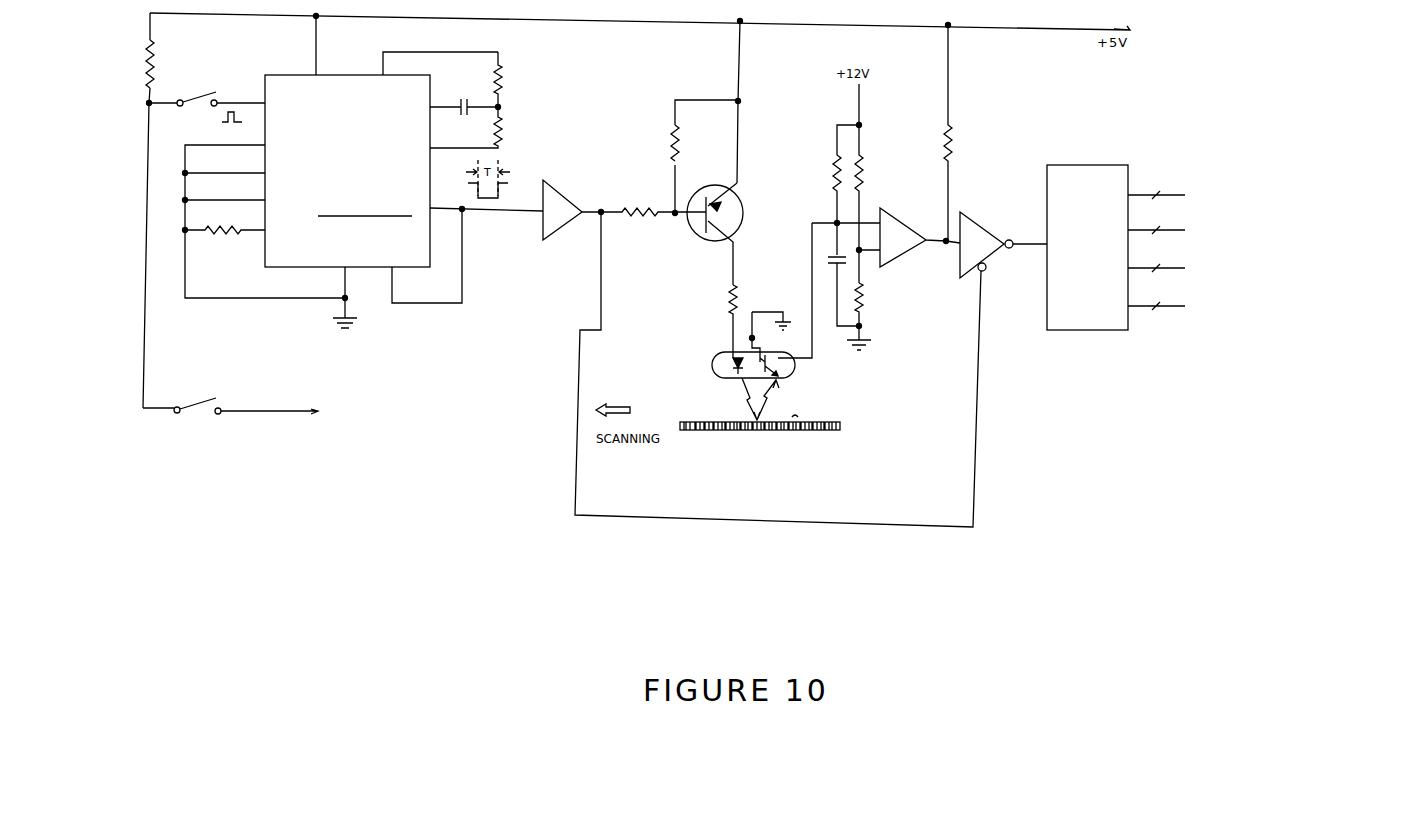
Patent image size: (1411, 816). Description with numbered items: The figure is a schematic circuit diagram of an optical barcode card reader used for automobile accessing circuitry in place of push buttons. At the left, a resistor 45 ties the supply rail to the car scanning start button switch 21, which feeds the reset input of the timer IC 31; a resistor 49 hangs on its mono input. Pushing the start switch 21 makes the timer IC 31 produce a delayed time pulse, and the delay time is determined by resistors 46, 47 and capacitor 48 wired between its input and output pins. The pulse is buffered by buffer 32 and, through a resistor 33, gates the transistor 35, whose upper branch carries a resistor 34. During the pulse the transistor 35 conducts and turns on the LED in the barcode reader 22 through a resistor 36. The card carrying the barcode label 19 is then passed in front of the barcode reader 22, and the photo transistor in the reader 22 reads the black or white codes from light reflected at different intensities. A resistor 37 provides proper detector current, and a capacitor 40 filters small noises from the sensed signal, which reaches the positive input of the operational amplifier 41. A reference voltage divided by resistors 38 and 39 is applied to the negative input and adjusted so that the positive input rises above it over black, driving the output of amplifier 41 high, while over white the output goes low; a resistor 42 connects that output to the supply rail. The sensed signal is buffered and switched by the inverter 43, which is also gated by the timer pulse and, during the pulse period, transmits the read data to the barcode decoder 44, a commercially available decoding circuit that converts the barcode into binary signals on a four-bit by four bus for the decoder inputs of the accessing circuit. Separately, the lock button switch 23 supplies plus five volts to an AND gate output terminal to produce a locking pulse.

The barcode label 19 is at (840, 427).
The car scanning start button switch 21 is at (208, 84).
The barcode reader head assembly 22 is at (721, 321).
The lock button switch 23 is at (331, 432).
The timer IC 31 is at (344, 86).
The buffer 32 is at (572, 210).
The resistor 33 is at (653, 221).
The resistor 34 is at (689, 156).
The transistor 35 is at (725, 153).
The resistor 36 is at (721, 321).
The resistor 37 is at (832, 190).
The resistor 38 is at (869, 183).
The resistor 39 is at (864, 316).
The capacitor 40 is at (835, 291).
The operational amplifier 41 is at (886, 237).
The resistor 42 is at (956, 133).
The inverter 43 is at (1003, 245).
The barcode decoder 44 is at (1080, 171).
The resistor 45 is at (138, 64).
The resistor 46 is at (506, 79).
The resistor 47 is at (474, 127).
The capacitor 48 is at (464, 101).
The resistor 49 is at (225, 239).